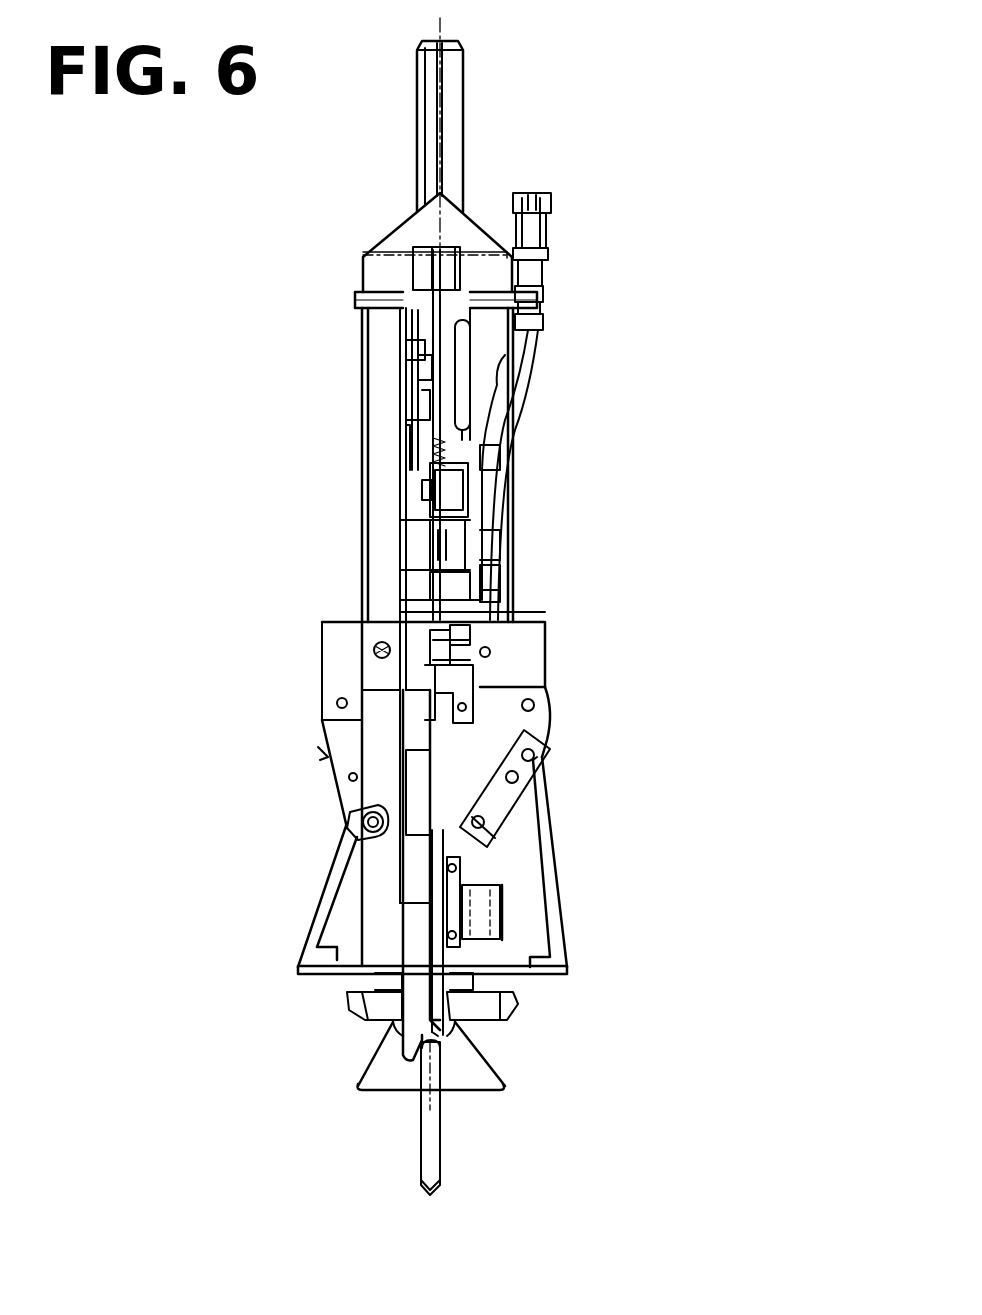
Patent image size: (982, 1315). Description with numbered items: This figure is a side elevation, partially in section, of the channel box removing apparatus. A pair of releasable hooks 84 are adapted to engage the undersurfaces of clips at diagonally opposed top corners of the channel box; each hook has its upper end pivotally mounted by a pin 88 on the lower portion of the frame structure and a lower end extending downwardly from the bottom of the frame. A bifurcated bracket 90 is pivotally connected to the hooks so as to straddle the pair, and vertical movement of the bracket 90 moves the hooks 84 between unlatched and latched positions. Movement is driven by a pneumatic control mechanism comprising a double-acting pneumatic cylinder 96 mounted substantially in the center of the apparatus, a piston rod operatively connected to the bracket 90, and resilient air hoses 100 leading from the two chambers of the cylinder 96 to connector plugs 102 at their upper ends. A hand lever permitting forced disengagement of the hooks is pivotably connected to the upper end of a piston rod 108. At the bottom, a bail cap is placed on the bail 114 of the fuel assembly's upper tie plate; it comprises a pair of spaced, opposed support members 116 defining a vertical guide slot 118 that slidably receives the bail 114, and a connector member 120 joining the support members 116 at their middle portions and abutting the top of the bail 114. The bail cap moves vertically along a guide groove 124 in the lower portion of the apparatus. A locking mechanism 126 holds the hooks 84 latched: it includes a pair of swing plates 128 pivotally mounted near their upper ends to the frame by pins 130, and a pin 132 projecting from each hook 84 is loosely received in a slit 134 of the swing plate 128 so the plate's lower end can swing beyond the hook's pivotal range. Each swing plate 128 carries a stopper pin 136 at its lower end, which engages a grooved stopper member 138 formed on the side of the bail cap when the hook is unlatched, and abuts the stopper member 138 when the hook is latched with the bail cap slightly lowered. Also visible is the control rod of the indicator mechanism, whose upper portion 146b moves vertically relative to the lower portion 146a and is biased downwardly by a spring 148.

The releasable hook 84 is at (348, 777).
The pin 88 is at (536, 705).
The bifurcated bracket 90 is at (460, 685).
The double-acting pneumatic cylinder 96 is at (490, 552).
The resilient air hoses 100 is at (530, 430).
The connector plug 102 is at (551, 200).
The piston rod 108 is at (455, 640).
The bail 114 is at (442, 1120).
The support members 116 is at (415, 1000).
The guide slot 118 is at (444, 1027).
The connector member 120 is at (515, 976).
The guide groove 124 is at (372, 820).
The locking mechanism 126 is at (648, 713).
The swing plate 128 is at (484, 824).
The pin 130 is at (534, 756).
The pin 132 is at (522, 795).
The slit 134 is at (519, 777).
The stopper pin 136 is at (492, 838).
The stopper member 138 is at (495, 920).
The lower portion of control rod 146a is at (430, 548).
The upper portion of control rod 146b is at (412, 318).
The spring 148 is at (432, 480).